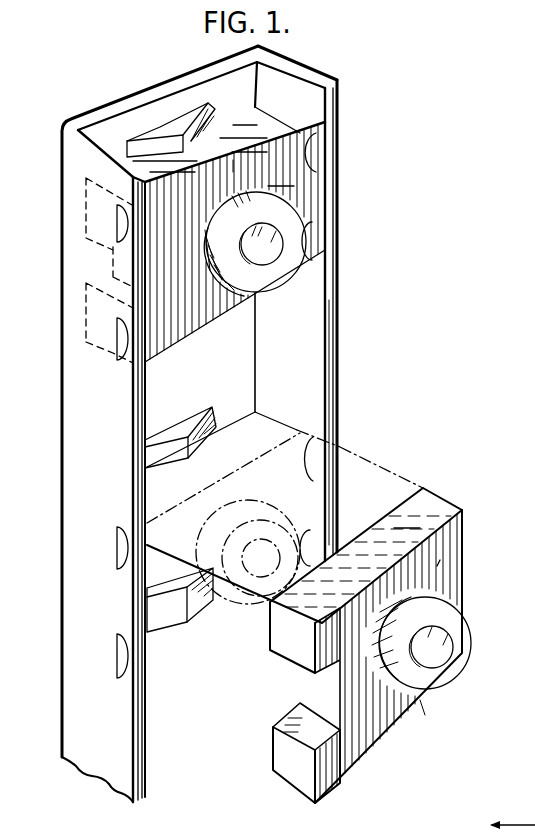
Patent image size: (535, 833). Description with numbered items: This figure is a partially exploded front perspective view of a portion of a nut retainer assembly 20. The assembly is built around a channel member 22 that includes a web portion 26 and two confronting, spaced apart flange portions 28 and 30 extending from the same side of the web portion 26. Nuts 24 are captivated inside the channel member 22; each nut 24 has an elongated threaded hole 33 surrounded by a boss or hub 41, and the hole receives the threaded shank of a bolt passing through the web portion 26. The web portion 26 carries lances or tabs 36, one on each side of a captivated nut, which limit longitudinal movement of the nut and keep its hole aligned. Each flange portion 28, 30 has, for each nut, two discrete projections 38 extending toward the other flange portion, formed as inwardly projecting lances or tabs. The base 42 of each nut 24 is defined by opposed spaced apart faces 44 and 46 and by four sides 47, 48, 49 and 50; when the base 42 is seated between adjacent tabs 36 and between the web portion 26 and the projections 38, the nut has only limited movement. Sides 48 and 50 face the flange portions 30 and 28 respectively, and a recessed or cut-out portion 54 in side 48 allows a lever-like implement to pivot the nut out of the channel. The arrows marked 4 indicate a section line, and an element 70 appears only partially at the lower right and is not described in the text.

The section line 4- 4 is at (388, 186).
The nut retainer assembly 20 is at (347, 330).
The channel member 22 is at (340, 447).
The nut 24 is at (266, 129).
The web portion 26 is at (230, 372).
The flange portion 28 is at (307, 398).
The flange portion 30 is at (85, 470).
The threaded hole 33 is at (253, 273).
The lance or tab 36 is at (148, 147).
The projection 38 is at (312, 150).
The boss or hub 41 is at (262, 191).
The nut base 42 is at (233, 170).
The face 44 is at (435, 567).
The face 46 is at (407, 493).
The side 47 is at (407, 515).
The side 48 is at (323, 685).
The side 49 is at (420, 722).
The side 50 is at (460, 597).
The recessed or cut-out portion 54 is at (310, 728).
The mating member 70 is at (533, 820).